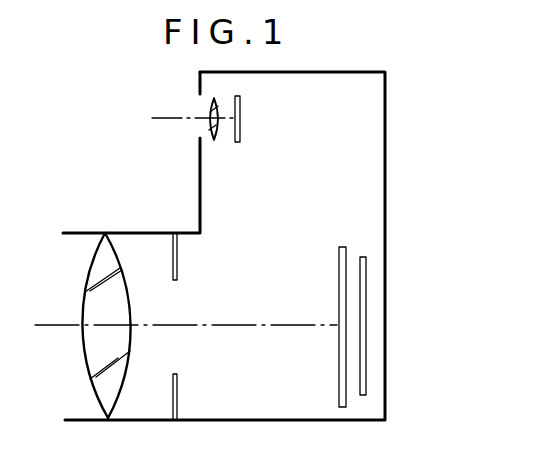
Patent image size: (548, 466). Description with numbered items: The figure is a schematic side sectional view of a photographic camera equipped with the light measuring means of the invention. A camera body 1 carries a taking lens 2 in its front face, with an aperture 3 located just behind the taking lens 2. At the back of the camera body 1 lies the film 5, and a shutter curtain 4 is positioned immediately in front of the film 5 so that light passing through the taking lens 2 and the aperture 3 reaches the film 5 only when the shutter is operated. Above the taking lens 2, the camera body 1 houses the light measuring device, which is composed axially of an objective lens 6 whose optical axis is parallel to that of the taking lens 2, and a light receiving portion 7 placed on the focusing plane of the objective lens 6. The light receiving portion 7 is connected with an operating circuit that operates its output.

The camera body 1 is at (388, 370).
The taking lens 2 is at (85, 362).
The aperture 3 is at (178, 383).
The shutter curtain 4 is at (338, 362).
The film 5 is at (367, 278).
The objective lens 6 is at (217, 138).
The light receiving portion 7 is at (241, 132).